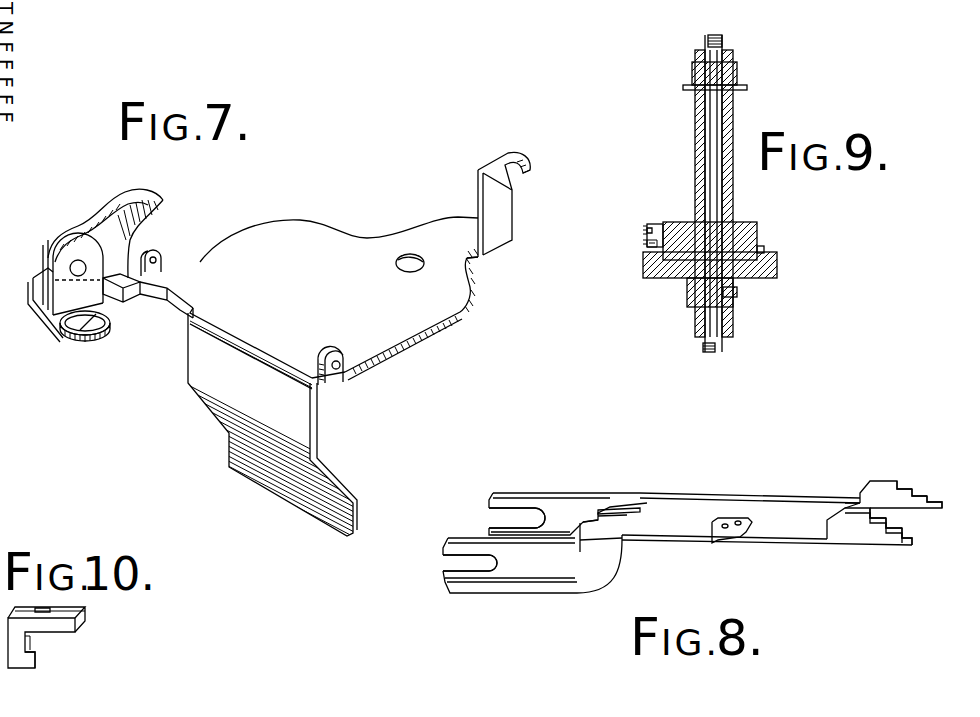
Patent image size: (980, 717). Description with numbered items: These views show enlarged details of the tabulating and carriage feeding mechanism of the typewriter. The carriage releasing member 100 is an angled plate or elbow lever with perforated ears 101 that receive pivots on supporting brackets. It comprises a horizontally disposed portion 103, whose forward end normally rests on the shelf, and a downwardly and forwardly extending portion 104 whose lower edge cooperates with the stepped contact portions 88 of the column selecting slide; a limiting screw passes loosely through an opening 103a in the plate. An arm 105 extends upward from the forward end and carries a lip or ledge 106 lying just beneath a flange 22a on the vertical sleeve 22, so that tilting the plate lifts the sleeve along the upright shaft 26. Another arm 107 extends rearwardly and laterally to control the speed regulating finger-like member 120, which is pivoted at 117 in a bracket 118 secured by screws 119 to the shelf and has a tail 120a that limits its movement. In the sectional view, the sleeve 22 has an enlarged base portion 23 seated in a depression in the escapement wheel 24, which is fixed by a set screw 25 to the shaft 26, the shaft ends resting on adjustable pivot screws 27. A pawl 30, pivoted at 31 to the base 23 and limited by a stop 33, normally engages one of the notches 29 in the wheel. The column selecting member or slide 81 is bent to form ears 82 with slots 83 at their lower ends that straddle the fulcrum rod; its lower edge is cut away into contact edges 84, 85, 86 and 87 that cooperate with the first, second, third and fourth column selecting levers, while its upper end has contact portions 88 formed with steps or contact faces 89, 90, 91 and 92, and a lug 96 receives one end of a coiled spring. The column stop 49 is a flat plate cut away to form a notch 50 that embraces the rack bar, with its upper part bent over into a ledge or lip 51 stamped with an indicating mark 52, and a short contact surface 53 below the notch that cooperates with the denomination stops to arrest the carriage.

In FIG. 7, the releasing member 100 is at (334, 303).
In FIG. 7, the perforated ears 101 is at (163, 260).
In FIG. 7, the horizontally disposed portion 103 is at (334, 243).
In FIG. 7, the opening 103a is at (416, 260).
In FIG. 7, the downwardly and forwardly extending portion 104 is at (312, 430).
In FIG. 7, the arm 105 is at (512, 205).
In FIG. 7, the lip or ledge 106 is at (518, 158).
In FIG. 7, the arm 107 is at (128, 300).
In FIG. 7, the pivot 117 is at (86, 262).
In FIG. 7, the bracket 118 is at (57, 318).
In FIG. 7, the screws 119 is at (90, 335).
In FIG. 7, the finger-like member 120 is at (110, 230).
In FIG. 7, the tail 120a is at (145, 283).
In FIG. 9, the vertical sleeve 22 is at (733, 105).
In FIG. 9, the flange 22a is at (758, 87).
In FIG. 9, the enlarged base portion 23 is at (748, 225).
In FIG. 9, the escapement wheel 24 is at (777, 265).
In FIG. 9, the set screw 25 is at (737, 292).
In FIG. 9, the upright shaft 26 is at (733, 325).
In FIG. 9, the adjustable pivot screws 27 is at (722, 41).
In FIG. 9, the notches 29 is at (761, 246).
In FIG. 9, the pawl 30 is at (655, 223).
In FIG. 9, the pivot 31 is at (648, 228).
In FIG. 9, the stop 33 is at (647, 243).
In FIG. 8, the column selecting member or slide 81 is at (767, 506).
In FIG. 8, the ears 82 is at (572, 492).
In FIG. 8, the slots 83 is at (489, 519).
In FIG. 8, the contact edge 84 is at (633, 510).
In FIG. 8, the contact edge 85 is at (615, 518).
In FIG. 8, the contact edge 86 is at (599, 528).
In FIG. 8, the contact edge 87 is at (580, 553).
In FIG. 8, the contact portions 88 is at (885, 484).
In FIG. 8, the step or contact face 89 is at (937, 502).
In FIG. 8, the step or contact face 90 is at (920, 496).
In FIG. 8, the step or contact face 91 is at (907, 489).
In FIG. 8, the step or contact face 92 is at (847, 503).
In FIG. 8, the lug 96 is at (714, 542).
In FIG. 10, the column stop 49 is at (53, 637).
In FIG. 10, the notch 50 is at (32, 645).
In FIG. 10, the ledge or lip 51 is at (85, 612).
In FIG. 10, the indicating mark 52 is at (45, 609).
In FIG. 10, the contact surface 53 is at (30, 660).